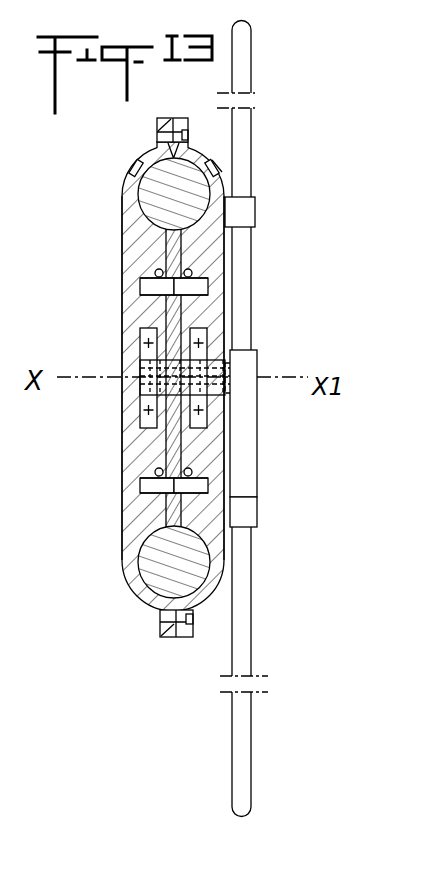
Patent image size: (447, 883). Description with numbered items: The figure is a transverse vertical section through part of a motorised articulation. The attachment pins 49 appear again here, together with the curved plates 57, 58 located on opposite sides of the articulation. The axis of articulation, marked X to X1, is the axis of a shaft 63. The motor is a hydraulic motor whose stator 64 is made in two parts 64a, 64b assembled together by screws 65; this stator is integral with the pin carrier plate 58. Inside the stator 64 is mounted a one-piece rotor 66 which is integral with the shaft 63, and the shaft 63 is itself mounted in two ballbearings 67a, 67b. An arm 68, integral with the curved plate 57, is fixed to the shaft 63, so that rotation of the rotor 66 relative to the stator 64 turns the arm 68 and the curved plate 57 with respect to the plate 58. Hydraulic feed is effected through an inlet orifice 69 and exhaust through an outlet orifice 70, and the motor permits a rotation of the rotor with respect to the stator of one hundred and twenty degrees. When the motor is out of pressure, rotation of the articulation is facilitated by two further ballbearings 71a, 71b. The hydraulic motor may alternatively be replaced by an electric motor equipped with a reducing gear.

The attachment pin 49 is at (240, 158).
The curved plate 57 is at (248, 518).
The curved plate 58 is at (250, 217).
The shaft 63 is at (217, 375).
The stator 64 is at (114, 344).
The stator part 64a is at (130, 258).
The stator part 64b is at (208, 265).
The screw 65 is at (188, 133).
The rotor 66 is at (150, 213).
The ballbearing 67a is at (140, 422).
The ballbearing 67b is at (207, 421).
The arm 68 is at (248, 468).
The inlet orifice 69 is at (128, 163).
The outlet orifice 70 is at (224, 170).
The ballbearing 71a is at (151, 274).
The ballbearing 71b is at (196, 274).